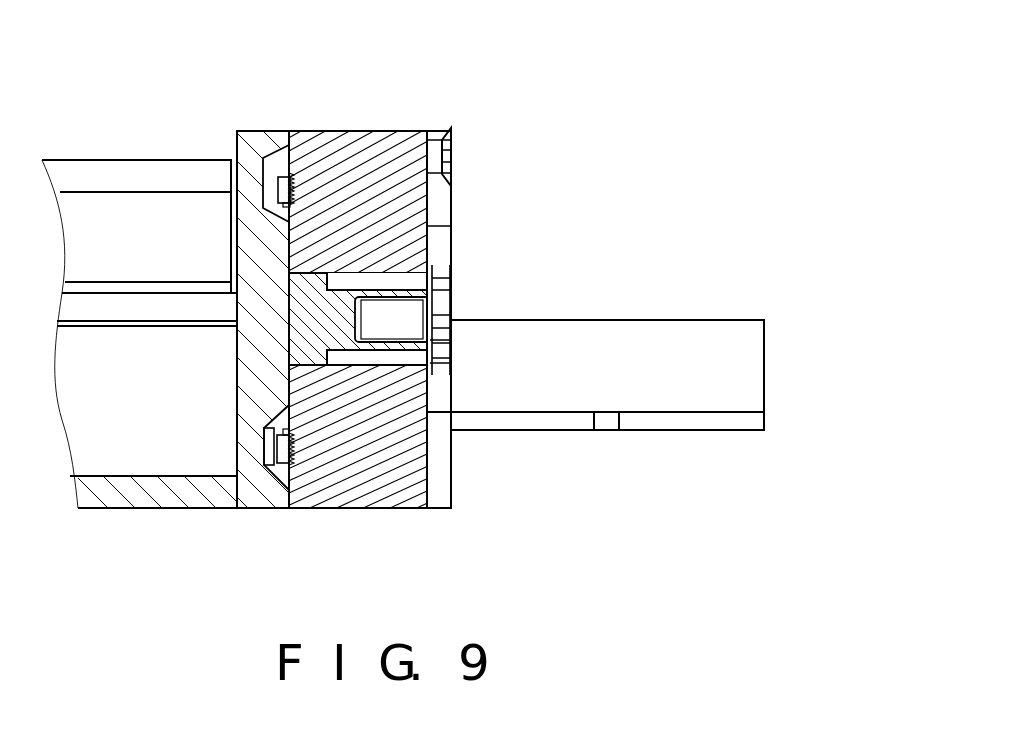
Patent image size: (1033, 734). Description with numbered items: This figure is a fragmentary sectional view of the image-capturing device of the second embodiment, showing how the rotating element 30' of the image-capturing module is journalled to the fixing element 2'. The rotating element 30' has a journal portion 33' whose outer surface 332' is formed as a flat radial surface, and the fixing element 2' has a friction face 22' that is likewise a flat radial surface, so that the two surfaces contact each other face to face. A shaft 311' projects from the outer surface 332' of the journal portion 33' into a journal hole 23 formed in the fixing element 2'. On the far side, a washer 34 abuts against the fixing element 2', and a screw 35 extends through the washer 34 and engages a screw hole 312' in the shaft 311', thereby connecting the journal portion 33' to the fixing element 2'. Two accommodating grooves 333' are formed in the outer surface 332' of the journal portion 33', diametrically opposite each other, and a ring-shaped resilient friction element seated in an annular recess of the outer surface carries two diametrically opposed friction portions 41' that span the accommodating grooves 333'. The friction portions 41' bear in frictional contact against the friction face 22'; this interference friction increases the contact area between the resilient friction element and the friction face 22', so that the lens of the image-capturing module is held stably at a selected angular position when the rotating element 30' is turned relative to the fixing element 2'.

The fixing element 2' is at (452, 303).
The friction face 22' is at (358, 176).
The journal hole 23 is at (465, 328).
The rotating element 30' is at (247, 362).
The journal portion 33' is at (228, 303).
The shaft 311' is at (420, 413).
The screw hole 312' is at (453, 378).
The outer surface 332' is at (276, 141).
The accommodating grooves 333' is at (236, 327).
The washer 34 is at (452, 240).
The screw 35 is at (485, 320).
The friction portions 41' is at (228, 345).